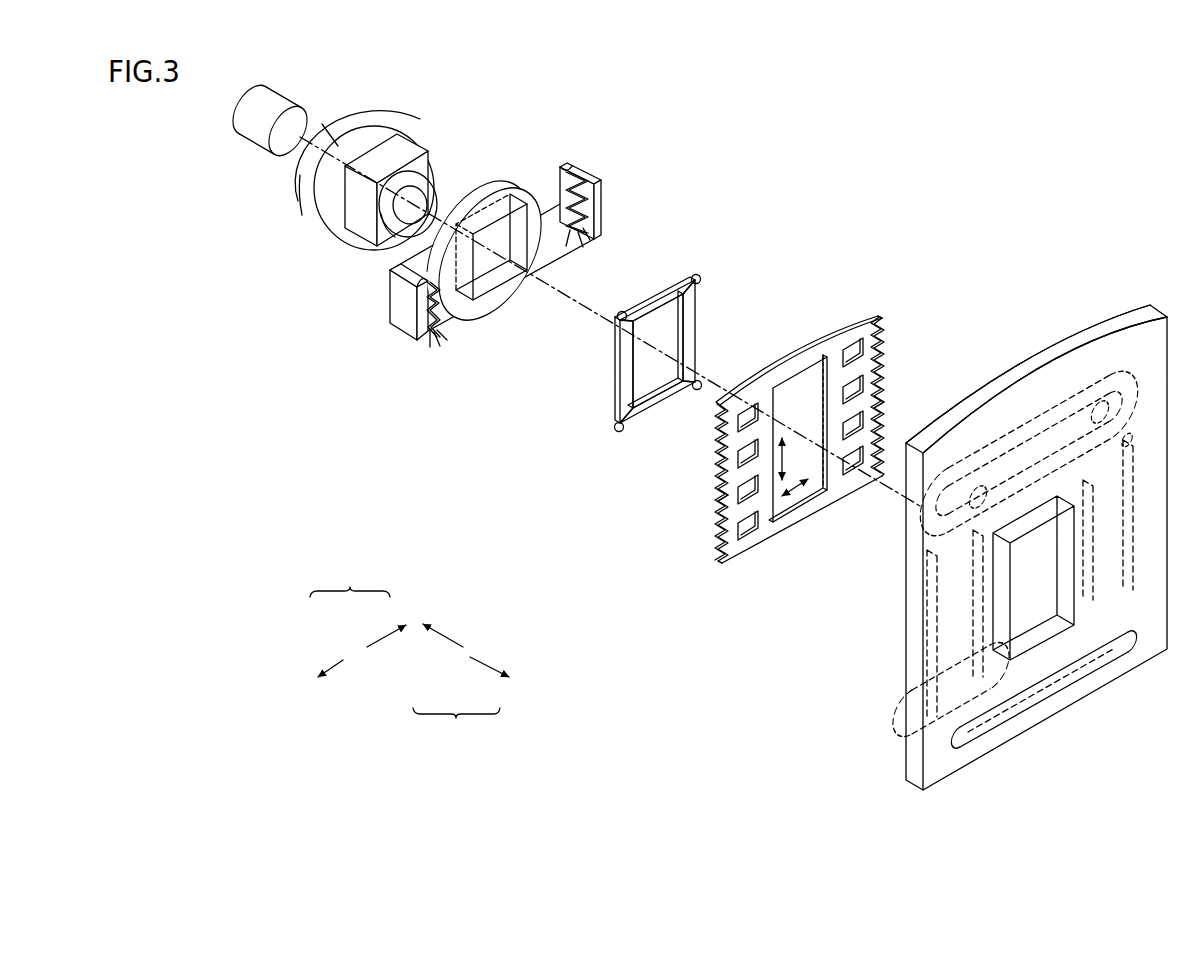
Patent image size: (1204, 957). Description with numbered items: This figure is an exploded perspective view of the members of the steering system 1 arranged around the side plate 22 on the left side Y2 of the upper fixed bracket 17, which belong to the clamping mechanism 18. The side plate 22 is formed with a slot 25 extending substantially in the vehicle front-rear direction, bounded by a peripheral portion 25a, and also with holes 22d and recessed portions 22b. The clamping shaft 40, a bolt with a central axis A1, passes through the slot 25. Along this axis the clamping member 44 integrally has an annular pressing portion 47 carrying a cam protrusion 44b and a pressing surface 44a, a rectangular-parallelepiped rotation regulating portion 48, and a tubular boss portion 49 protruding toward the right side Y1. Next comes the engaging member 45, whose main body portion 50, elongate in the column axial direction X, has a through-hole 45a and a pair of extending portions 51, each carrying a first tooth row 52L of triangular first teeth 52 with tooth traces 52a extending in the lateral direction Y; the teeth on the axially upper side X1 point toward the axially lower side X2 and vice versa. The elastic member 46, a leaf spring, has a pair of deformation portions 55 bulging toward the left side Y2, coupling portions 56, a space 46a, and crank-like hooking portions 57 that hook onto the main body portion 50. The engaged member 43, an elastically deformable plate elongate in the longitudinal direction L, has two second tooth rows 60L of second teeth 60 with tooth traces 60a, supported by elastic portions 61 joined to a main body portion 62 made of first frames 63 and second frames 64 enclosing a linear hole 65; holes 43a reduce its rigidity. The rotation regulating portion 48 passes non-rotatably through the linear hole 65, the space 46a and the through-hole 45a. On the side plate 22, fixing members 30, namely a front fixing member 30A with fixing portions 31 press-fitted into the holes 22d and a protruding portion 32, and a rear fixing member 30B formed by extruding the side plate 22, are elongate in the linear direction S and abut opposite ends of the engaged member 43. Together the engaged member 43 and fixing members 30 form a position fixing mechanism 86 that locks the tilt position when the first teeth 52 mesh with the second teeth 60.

The steering system 1 is at (968, 228).
The upper fixed bracket 17 is at (1137, 313).
The clamping mechanism 18 is at (607, 349).
The side plate 22 is at (975, 521).
The recessed portion 22b is at (1128, 434).
The hole 22d is at (1097, 385).
The slot 25 is at (1040, 690).
The peripheral portion 25a is at (1046, 702).
The fixing member 30 is at (946, 502).
The front fixing member 30A is at (1029, 398).
The rear fixing member 30B is at (933, 687).
The fixing portion 31 is at (979, 487).
The protruding portion 32 is at (1022, 430).
The clamping shaft 40 is at (253, 133).
The engaged member 43 is at (820, 440).
The hole 43a is at (737, 463).
The clamping member 44 is at (401, 176).
The pressing surface 44a is at (367, 143).
The cam protrusion 44b is at (304, 204).
The engaging member 45 is at (499, 261).
The through-hole 45a is at (478, 268).
The elastic member 46 is at (696, 358).
The space 46a is at (661, 340).
The pressing portion 47 is at (385, 115).
The rotation regulating portion 48 is at (400, 150).
The boss portion 49 is at (387, 222).
The main body portion 50 is at (540, 195).
The extending portion 51 is at (408, 325).
The first tooth 52 is at (437, 325).
The tooth trace 52a is at (420, 287).
The first tooth row 52L is at (430, 335).
The deformation portion 55 is at (623, 378).
The coupling portion 56 is at (697, 315).
The hooking portion 57 is at (622, 312).
The second tooth 60 is at (722, 550).
The tooth trace 60a is at (722, 491).
The second tooth row 60L is at (874, 317).
The elastic portion 61 is at (757, 396).
The main body portion 62 is at (826, 329).
The first frame 63 is at (836, 388).
The second frame 64 is at (801, 363).
The linear hole 65 is at (812, 466).
The position fixing mechanism 86 is at (946, 502).
The central axis A1 is at (312, 142).
The longitudinal direction L is at (785, 458).
The linear direction S is at (800, 497).
The column axial direction X is at (358, 618).
The axially upper side X1 is at (345, 658).
The axially lower side X2 is at (375, 643).
The lateral direction Y is at (461, 682).
The right side Y1 is at (485, 663).
The left side Y2 is at (443, 637).